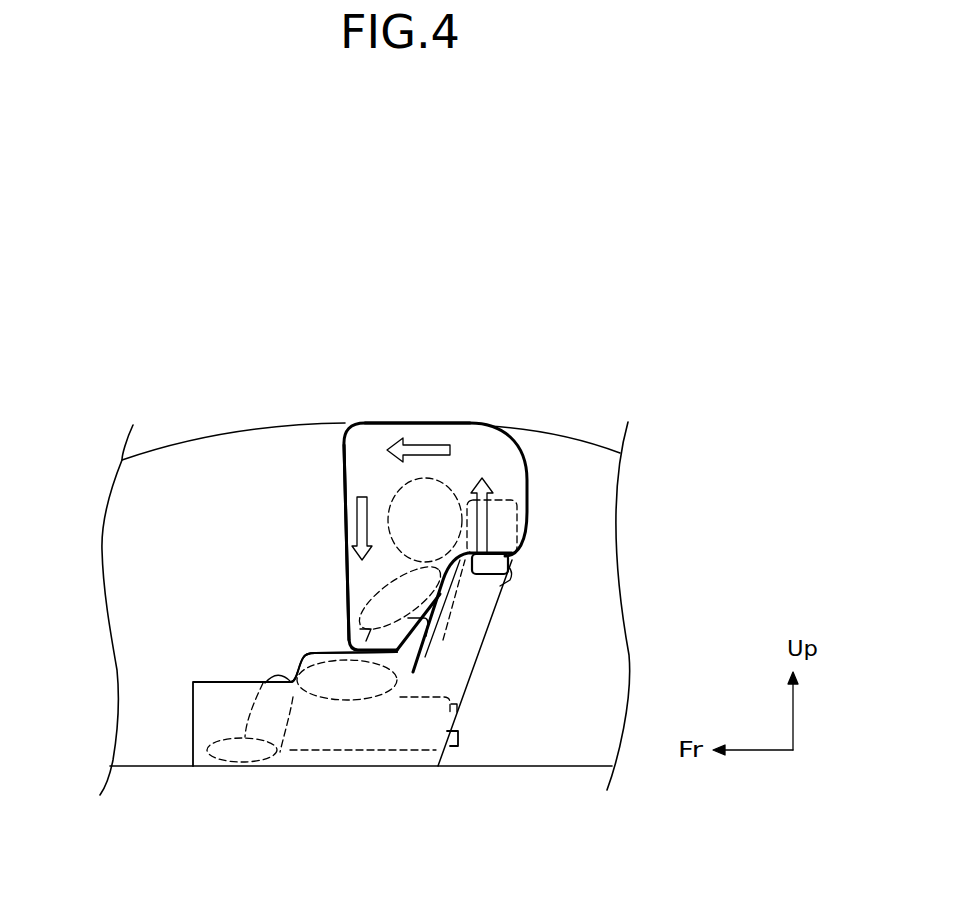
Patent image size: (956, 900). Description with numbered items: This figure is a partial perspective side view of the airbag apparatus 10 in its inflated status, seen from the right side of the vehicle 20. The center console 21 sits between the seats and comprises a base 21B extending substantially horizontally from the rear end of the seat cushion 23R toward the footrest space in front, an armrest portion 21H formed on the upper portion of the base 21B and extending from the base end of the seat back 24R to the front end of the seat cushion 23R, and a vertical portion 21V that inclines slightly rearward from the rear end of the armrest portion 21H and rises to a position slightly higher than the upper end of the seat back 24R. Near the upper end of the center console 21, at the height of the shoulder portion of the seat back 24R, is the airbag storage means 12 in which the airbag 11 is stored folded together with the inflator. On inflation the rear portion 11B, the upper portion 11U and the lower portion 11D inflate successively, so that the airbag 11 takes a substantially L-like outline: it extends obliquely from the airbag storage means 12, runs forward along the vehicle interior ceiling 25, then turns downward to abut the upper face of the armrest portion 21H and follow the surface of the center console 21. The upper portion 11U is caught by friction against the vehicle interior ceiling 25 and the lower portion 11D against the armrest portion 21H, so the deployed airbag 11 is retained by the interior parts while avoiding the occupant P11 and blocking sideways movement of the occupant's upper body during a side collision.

The vehicle interior ceiling 25 is at (228, 443).
The vehicle 20 is at (531, 420).
The airbag 11 is at (343, 473).
The upper portion 11U is at (405, 423).
The lower portion 11D is at (345, 518).
The rear portion 11B is at (531, 489).
The airbag apparatus 10 is at (545, 512).
The occupant P11 is at (375, 602).
The airbag storage means 12 is at (506, 580).
The center console 21 is at (193, 692).
The armrest portion 21H is at (300, 660).
The vertical portion 21V is at (443, 623).
The seat back 24R is at (430, 650).
The seat cushion 23R is at (460, 739).
The base 21B is at (207, 725).